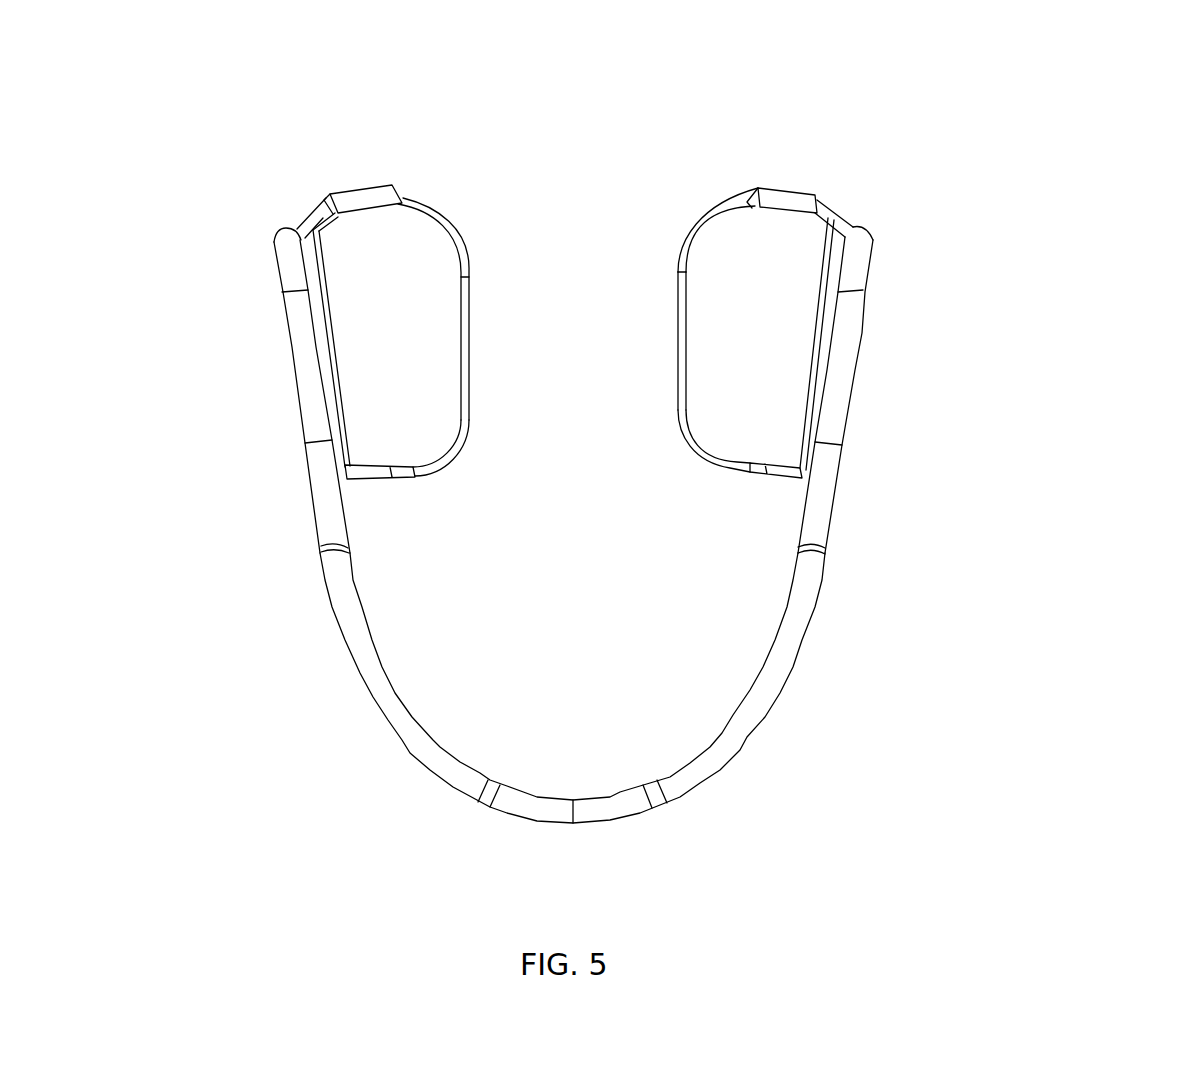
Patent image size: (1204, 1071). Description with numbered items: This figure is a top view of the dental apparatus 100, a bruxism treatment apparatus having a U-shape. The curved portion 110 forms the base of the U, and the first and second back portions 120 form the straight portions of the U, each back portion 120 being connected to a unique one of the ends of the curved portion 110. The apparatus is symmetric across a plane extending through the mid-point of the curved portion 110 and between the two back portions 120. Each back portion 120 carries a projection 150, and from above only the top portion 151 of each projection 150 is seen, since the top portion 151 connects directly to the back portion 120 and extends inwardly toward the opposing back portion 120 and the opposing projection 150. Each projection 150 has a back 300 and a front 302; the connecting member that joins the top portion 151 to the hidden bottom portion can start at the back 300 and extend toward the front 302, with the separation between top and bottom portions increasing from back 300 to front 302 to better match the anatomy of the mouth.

The dental apparatus 100 is at (665, 441).
The curved portion 110 is at (711, 771).
The back portion 120 is at (297, 377).
The projection 150 is at (600, 344).
The top portion 151 is at (447, 413).
The back 300 is at (362, 167).
The front 302 is at (407, 494).